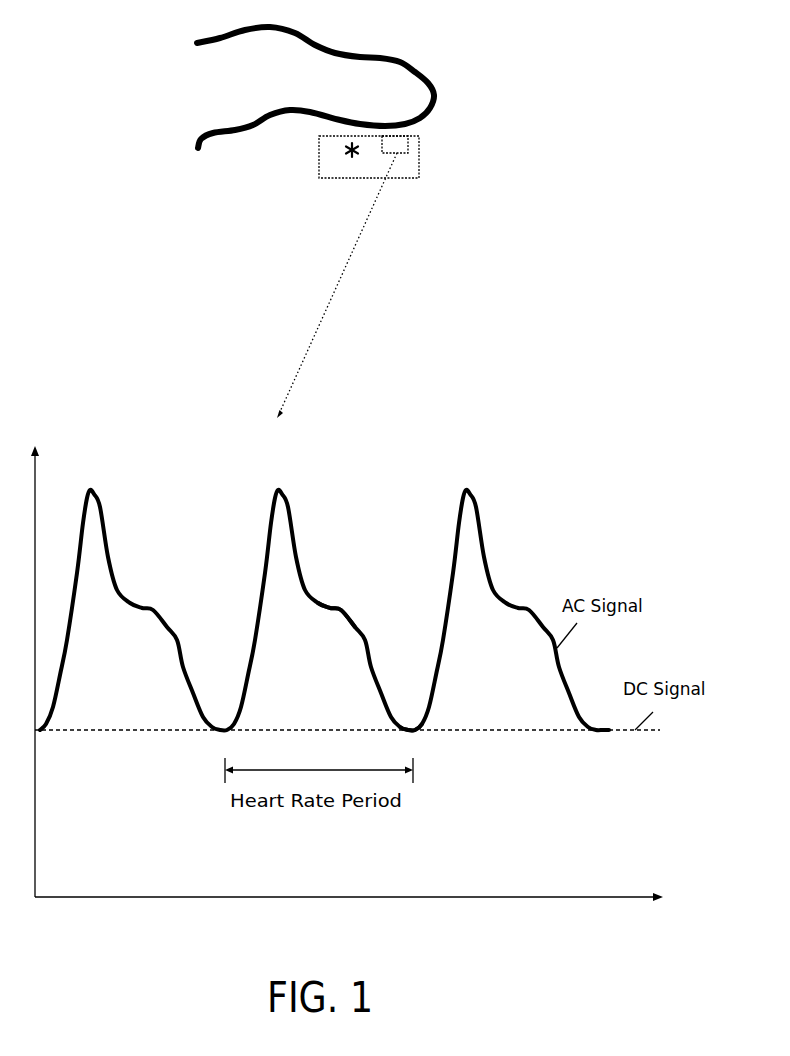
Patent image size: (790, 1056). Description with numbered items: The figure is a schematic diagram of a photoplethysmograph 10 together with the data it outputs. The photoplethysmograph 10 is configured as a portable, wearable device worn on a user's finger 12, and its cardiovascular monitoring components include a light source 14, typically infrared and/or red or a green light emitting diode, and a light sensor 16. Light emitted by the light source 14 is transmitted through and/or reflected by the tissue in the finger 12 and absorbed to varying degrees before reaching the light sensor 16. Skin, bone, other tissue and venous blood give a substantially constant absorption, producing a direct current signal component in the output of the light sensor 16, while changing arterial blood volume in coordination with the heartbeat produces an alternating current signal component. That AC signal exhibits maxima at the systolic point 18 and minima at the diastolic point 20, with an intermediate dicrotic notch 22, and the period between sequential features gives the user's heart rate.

The photoplethysmograph 10 is at (408, 178).
The finger 12 is at (397, 63).
The light source 14 is at (343, 152).
The light sensor 16 is at (410, 143).
The systolic point 18 is at (277, 485).
The diastolic point 20 is at (410, 728).
The dicrotic notch 22 is at (332, 607).